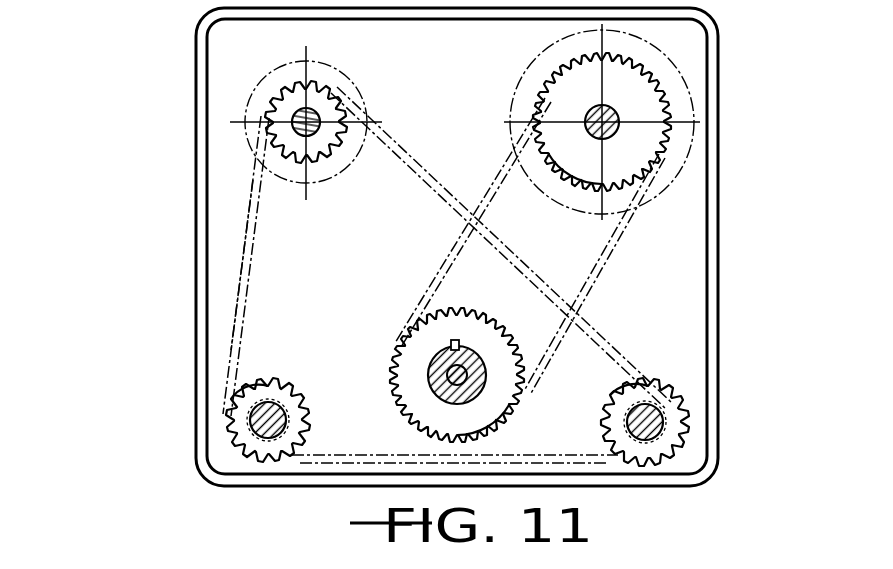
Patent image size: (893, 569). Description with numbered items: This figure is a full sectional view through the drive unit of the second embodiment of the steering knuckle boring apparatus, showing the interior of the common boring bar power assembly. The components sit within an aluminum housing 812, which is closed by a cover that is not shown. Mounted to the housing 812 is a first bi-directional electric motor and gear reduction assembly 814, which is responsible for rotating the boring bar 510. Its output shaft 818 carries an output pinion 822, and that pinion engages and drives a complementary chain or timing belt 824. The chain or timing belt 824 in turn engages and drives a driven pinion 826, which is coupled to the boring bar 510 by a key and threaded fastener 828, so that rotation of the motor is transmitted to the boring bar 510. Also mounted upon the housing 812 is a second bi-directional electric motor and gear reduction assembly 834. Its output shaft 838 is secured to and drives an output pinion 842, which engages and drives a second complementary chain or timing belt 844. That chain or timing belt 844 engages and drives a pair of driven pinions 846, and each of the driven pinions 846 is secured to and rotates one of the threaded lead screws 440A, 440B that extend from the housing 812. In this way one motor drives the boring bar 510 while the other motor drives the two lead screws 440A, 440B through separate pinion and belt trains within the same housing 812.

The housing 812 is at (197, 300).
The first bi-directional electric motor and gear reduction assembly 814 is at (675, 183).
The output shaft 818 is at (618, 112).
The output pinion 822 is at (610, 157).
The chain or timing belt 824 is at (585, 288).
The driven pinion 826 is at (497, 395).
The key and threaded fastener 828 is at (447, 355).
The boring bar 510 is at (447, 375).
The second bi-directional electric motor and gear reduction assembly 834 is at (258, 192).
The output shaft 838 is at (300, 115).
The output pinion 842 is at (335, 105).
The chain or timing belt 844 is at (248, 303).
The driven pinions 846 is at (258, 382).
The threaded lead screw 440A is at (648, 420).
The threaded lead screw 440B is at (262, 418).